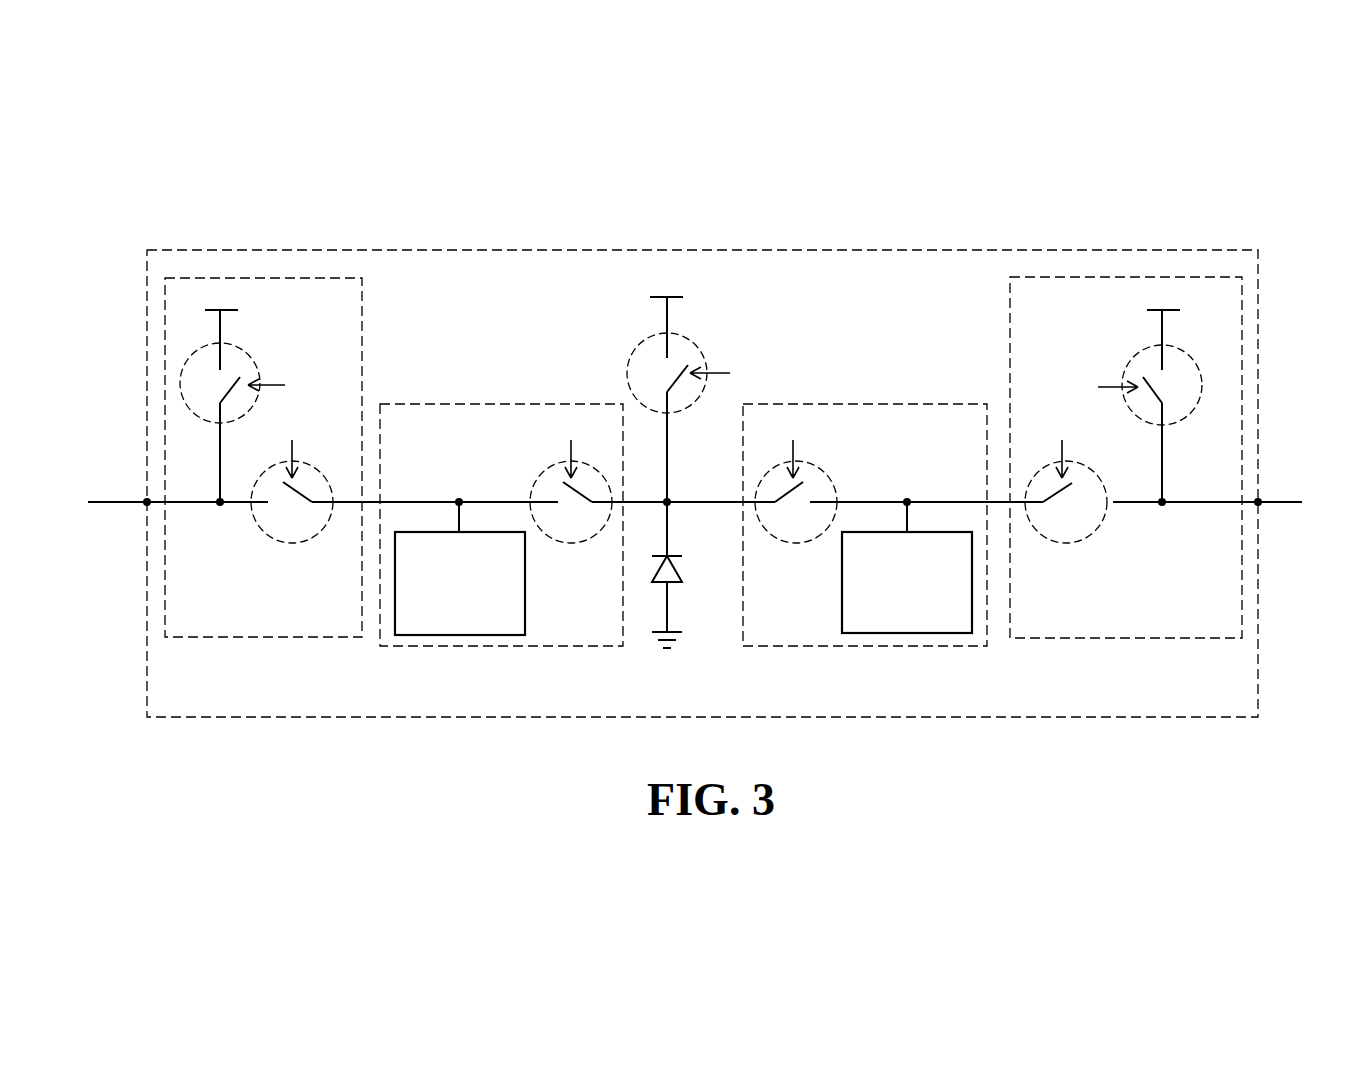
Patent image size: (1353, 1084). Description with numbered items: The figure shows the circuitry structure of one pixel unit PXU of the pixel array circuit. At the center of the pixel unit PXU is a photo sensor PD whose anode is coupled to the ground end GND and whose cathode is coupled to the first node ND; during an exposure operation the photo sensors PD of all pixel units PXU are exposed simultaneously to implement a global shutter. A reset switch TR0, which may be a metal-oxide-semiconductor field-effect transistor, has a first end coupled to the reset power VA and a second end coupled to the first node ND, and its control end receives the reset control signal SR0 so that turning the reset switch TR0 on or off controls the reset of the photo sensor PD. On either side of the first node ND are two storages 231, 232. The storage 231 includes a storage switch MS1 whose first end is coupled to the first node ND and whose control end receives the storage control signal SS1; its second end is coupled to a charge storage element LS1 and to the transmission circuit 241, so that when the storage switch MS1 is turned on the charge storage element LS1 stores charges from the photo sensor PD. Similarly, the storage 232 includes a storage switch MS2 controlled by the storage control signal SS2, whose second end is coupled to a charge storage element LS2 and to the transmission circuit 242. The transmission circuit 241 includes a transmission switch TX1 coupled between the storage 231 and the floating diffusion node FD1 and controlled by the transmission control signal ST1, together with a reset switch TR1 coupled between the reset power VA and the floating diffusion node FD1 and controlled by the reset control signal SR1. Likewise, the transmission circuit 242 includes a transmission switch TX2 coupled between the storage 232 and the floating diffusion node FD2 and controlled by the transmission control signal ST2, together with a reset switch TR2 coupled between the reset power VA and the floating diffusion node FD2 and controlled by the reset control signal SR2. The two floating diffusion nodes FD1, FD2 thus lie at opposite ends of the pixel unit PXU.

The pixel unit PXU is at (702, 248).
The transmission circuit 242 is at (262, 640).
The transmission circuit 241 is at (1128, 640).
The storage 232 is at (503, 402).
The storage 231 is at (861, 402).
The reset power VA is at (691, 319).
The reset switch TR2 is at (250, 353).
The reset control signal SR2 is at (291, 388).
The transmission switch TX2 is at (292, 543).
The transmission control signal ST2 is at (289, 445).
The storage switch MS2 is at (543, 470).
The storage control signal SS2 is at (569, 445).
The charge storage element LS2 is at (527, 570).
The reset switch TR0 is at (695, 340).
The reset control signal SR0 is at (735, 376).
The first node ND is at (667, 502).
The photo sensor PD is at (677, 575).
The ground end GND is at (666, 652).
The storage switch MS1 is at (823, 470).
The storage control signal SS1 is at (791, 445).
The charge storage element LS1 is at (842, 572).
The transmission switch TX1 is at (1066, 543).
The transmission control signal ST1 is at (1060, 444).
The reset switch TR1 is at (1190, 353).
The reset control signal SR1 is at (1092, 388).
The floating diffusion node FD2 is at (147, 502).
The floating diffusion node FD1 is at (1258, 502).